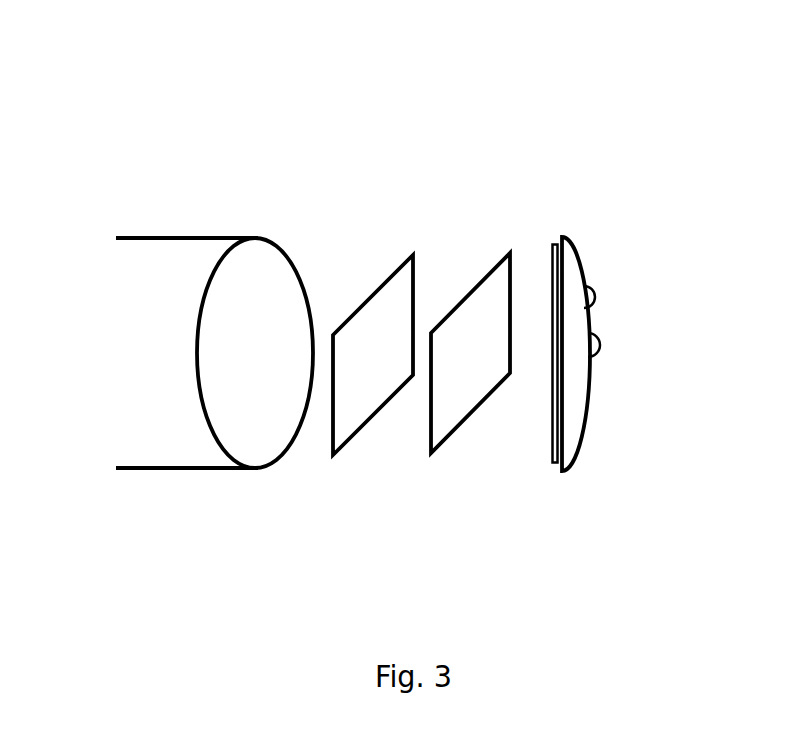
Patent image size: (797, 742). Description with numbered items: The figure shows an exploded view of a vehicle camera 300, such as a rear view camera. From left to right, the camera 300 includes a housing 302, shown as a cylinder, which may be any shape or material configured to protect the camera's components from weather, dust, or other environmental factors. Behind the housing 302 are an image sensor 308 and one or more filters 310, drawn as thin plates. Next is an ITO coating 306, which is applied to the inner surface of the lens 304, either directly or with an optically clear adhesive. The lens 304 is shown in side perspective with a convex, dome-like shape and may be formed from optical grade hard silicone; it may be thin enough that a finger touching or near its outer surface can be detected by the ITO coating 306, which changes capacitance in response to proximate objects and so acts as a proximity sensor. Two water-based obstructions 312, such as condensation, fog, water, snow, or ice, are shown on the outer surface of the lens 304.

The vehicle camera 300 is at (95, 104).
The housing 302 is at (160, 236).
The lens 304 is at (573, 247).
The ITO coating 306 is at (553, 240).
The image sensor 308 is at (386, 278).
The filters 310 is at (495, 262).
The water-based obstructions 312 is at (593, 335).